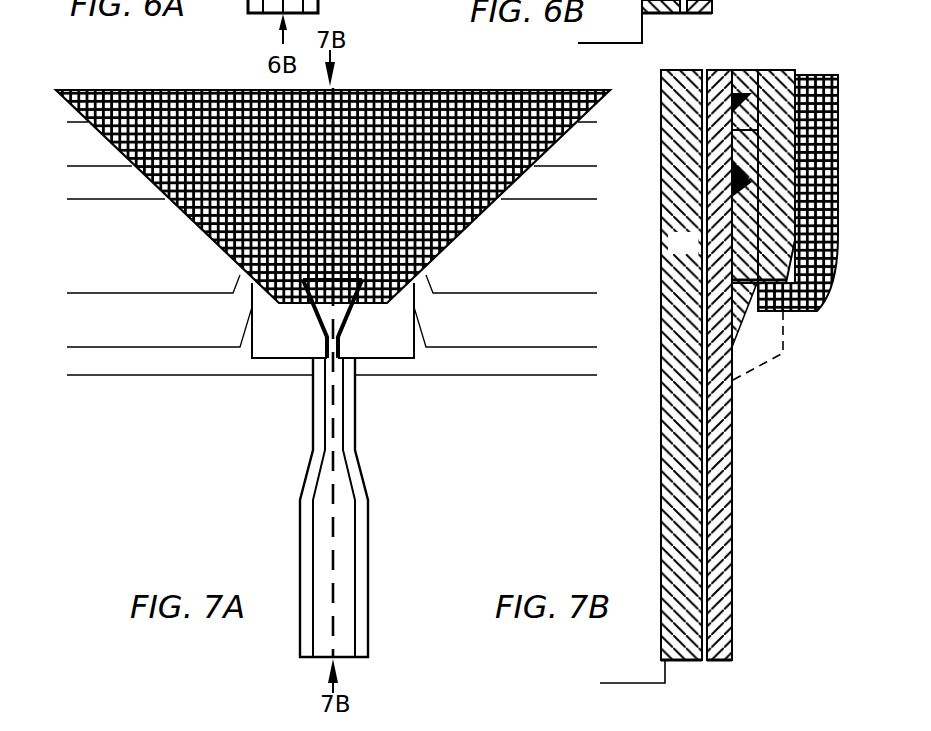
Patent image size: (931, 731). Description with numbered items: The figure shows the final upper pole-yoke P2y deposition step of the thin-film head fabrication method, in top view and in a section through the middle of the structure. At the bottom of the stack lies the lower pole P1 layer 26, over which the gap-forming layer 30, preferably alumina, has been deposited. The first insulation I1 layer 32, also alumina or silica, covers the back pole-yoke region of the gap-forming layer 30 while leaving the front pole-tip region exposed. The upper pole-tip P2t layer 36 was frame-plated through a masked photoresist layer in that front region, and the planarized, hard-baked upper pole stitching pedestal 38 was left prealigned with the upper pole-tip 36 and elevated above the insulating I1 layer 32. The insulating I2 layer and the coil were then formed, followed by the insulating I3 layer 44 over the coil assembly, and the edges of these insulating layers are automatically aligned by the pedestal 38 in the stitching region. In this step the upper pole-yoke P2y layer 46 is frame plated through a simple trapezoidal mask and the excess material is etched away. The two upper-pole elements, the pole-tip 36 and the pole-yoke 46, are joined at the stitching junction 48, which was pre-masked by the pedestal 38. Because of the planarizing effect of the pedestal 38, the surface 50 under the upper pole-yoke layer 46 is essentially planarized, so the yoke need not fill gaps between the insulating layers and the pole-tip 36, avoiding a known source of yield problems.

In FIG. 7B, the lower pole layer 26 is at (665, 479).
In FIG. 7B, the gap-forming layer 30 is at (703, 98).
In FIG. 7B, the first insulation layer 32 is at (712, 157).
In FIG. 7B, the upper pole-tip layer 36 is at (733, 485).
In FIG. 7A, the upper pole stitching pedestal 38 is at (406, 345).
In FIG. 7B, the upper pole stitching pedestal 38 is at (818, 302).
In FIG. 7B, the third insulating layer 44 is at (777, 100).
In FIG. 7A, the upper pole-yoke layer 46 is at (177, 211).
In FIG. 7B, the upper pole-yoke layer 46 is at (840, 108).
In FIG. 7B, the stitching junction 48 is at (785, 353).
In FIG. 7B, the surface under upper pole-yoke 50 is at (795, 75).
In FIG. 7A, the first insulation layer designation I1 is at (529, 373).
In FIG. 7B, the first insulation layer designation I1 is at (710, 286).
In FIG. 7A, the second insulating layer designation I2 is at (490, 333).
In FIG. 7B, the second insulating layer designation I2 is at (753, 225).
In FIG. 7A, the third insulating layer designation I3 is at (529, 259).
In FIG. 7B, the third insulating layer designation I3 is at (800, 170).
In FIG. 7A, the lower pole P1 is at (368, 512).
In FIG. 7B, the lower pole P1 is at (683, 243).
In FIG. 7A, the upper pole-tip P2t is at (355, 608).
In FIG. 7B, the upper pole-tip P2t is at (733, 450).
In FIG. 7B, the upper pole-yoke P2y is at (830, 260).